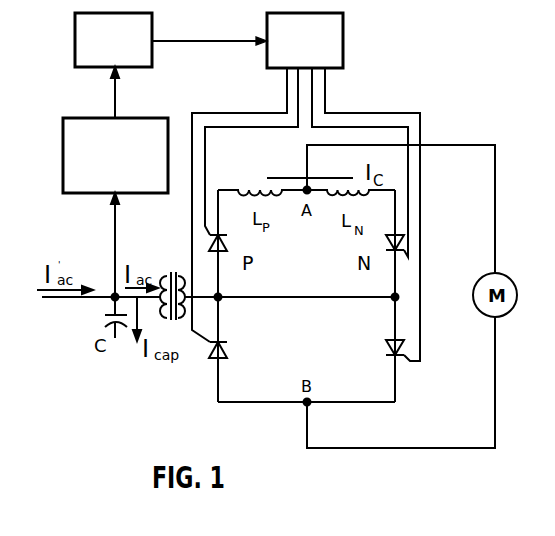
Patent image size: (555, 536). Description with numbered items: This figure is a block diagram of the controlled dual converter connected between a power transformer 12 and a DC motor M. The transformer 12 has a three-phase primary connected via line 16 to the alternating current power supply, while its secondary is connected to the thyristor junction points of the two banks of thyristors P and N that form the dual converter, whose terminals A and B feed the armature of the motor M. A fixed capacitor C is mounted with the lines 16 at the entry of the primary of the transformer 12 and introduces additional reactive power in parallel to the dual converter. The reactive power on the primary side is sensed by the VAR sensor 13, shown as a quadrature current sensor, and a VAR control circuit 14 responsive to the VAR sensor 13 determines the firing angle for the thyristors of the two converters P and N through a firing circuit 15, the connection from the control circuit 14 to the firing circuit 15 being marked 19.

The power transformer 12 is at (175, 265).
The VAR sensor 13 is at (102, 117).
The VAR control circuit 14 is at (152, 19).
The firing circuit 15 is at (345, 28).
The line 16 is at (80, 300).
The control signal line 19 is at (230, 38).